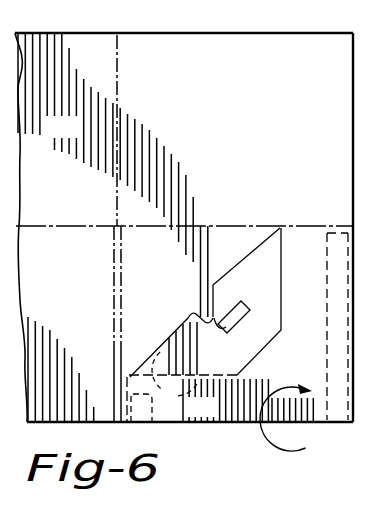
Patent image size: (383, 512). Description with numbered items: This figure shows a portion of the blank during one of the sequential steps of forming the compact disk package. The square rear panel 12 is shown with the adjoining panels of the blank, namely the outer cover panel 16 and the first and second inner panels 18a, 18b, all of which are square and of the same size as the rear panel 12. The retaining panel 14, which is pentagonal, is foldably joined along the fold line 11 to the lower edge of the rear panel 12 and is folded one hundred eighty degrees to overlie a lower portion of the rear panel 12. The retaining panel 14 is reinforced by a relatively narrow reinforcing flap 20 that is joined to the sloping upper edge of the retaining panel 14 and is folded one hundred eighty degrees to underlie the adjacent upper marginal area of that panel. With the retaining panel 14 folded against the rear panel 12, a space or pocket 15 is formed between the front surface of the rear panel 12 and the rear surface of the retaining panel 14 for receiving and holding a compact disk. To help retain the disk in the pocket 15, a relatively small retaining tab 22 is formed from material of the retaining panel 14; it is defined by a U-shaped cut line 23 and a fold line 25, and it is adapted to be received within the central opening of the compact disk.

The fold line 11 is at (197, 228).
The rear panel 12 is at (205, 285).
The retaining panel 14 is at (308, 373).
The pocket 15 is at (172, 333).
The outer cover panel 16 is at (68, 285).
The first inner panel 18a is at (249, 133).
The second inner panel 18b is at (78, 137).
The reinforcing flap 20 is at (197, 387).
The retaining tab 22 is at (220, 338).
The U-shaped cut line 23 is at (246, 328).
The fold line 25 is at (222, 305).